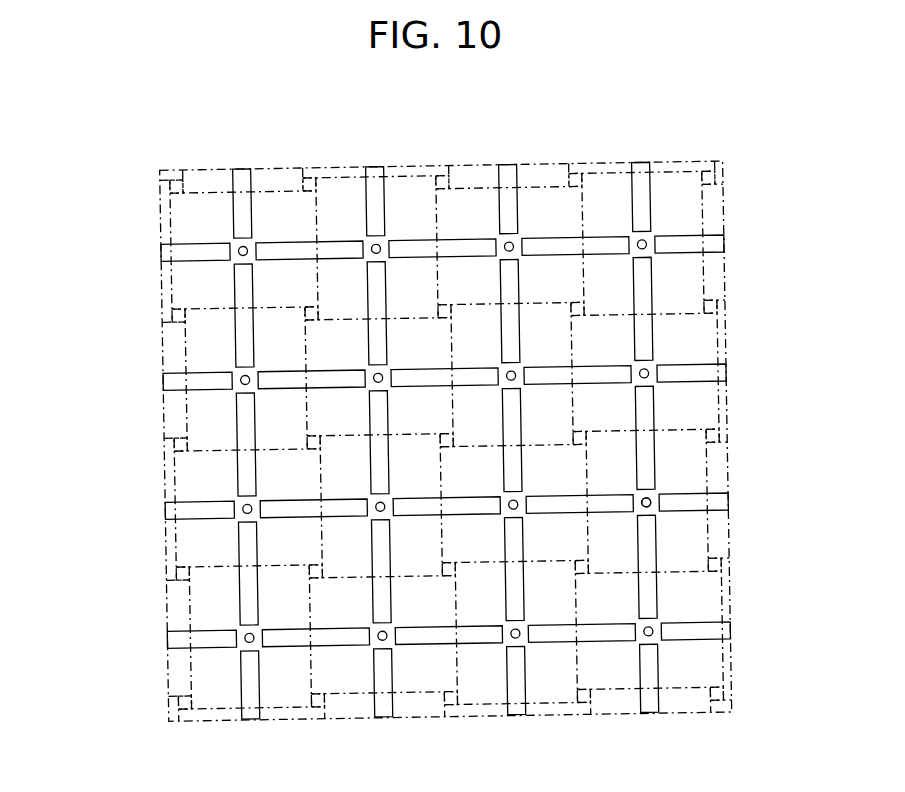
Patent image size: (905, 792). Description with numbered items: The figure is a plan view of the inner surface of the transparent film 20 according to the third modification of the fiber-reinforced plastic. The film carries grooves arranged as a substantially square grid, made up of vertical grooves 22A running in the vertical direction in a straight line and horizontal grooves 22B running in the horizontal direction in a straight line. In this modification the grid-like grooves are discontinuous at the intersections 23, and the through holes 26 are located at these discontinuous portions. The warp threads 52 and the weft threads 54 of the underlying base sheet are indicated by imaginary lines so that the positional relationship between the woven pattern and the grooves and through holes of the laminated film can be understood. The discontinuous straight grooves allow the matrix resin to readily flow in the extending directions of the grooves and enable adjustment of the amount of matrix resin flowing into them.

The transparent film 20 is at (620, 158).
The vertical grooves 22A is at (242, 205).
The horizontal grooves 22B is at (195, 251).
The intersections 23 is at (651, 506).
The through holes 26 is at (646, 240).
The warp threads 52 is at (327, 205).
The weft threads 54 is at (459, 204).